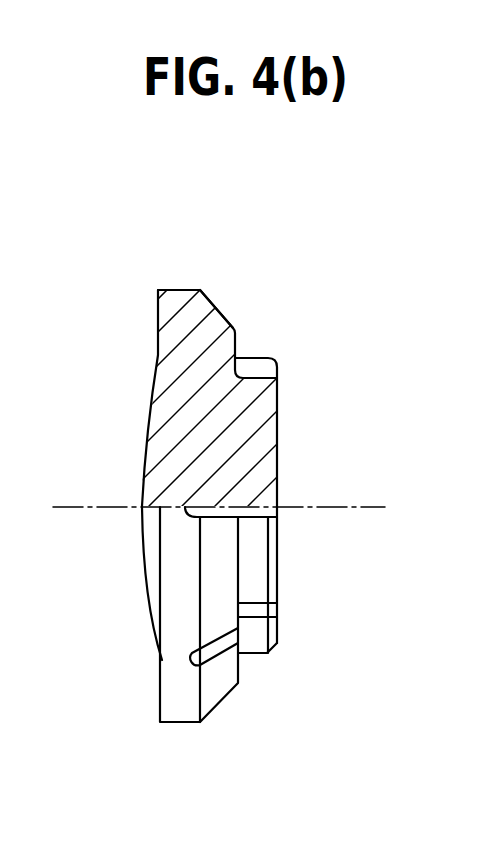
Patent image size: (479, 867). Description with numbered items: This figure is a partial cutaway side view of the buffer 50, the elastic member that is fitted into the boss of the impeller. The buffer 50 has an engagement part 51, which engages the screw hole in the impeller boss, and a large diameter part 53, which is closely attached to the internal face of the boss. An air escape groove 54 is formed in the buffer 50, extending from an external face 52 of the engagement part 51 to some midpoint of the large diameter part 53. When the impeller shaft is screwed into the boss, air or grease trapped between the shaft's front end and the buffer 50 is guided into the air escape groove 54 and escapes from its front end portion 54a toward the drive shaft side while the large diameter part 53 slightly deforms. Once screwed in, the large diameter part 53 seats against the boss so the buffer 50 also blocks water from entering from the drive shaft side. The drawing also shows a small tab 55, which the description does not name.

The buffer 50 is at (318, 335).
The engagement part 51 is at (278, 548).
The external face 52 is at (258, 570).
The large diameter part 53 is at (166, 276).
The air escape groove 54 is at (236, 323).
The front end portion of the air escape groove 54a is at (208, 284).
The tab 55 is at (188, 657).